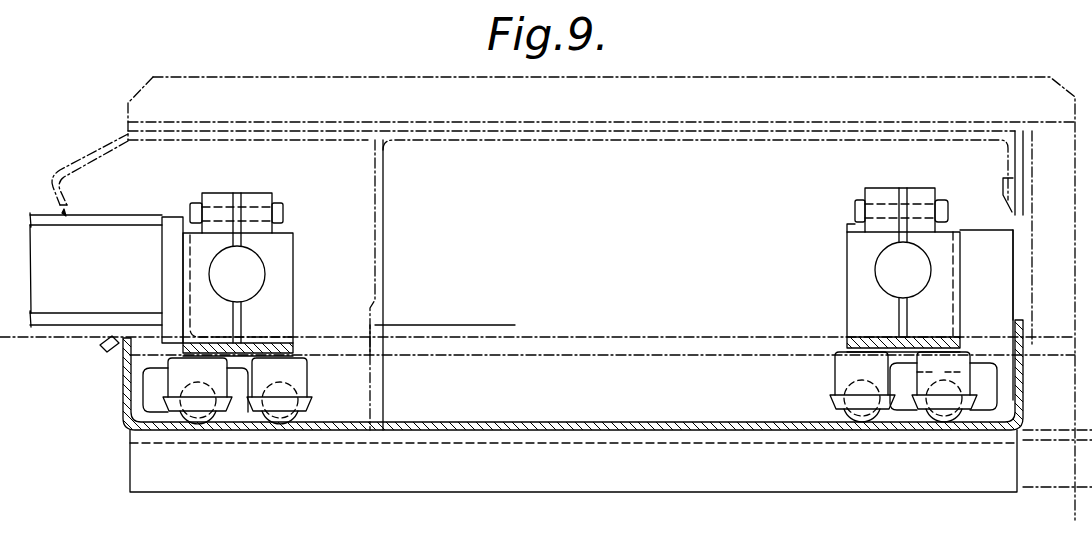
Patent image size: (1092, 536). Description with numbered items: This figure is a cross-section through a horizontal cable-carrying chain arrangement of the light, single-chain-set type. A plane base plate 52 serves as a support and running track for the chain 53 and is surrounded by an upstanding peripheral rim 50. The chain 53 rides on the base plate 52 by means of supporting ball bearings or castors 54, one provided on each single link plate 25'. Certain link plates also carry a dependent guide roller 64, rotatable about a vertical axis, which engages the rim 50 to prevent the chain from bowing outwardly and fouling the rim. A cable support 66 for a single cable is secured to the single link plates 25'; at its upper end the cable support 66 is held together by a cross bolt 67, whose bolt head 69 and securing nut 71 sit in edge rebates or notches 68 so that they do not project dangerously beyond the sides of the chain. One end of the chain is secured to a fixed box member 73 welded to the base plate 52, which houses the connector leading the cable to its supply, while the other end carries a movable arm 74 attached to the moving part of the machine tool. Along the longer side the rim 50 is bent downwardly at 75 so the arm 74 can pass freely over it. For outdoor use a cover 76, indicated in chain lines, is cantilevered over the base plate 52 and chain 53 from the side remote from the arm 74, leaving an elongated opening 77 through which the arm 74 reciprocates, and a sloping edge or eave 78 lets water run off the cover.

The single link plate 25' is at (905, 252).
The peripheral rim 50 is at (128, 383).
The base plate 52 is at (436, 418).
The chain 53 is at (541, 330).
The castor 54 is at (962, 375).
The guide roller 64 is at (148, 388).
The cable support 66 is at (851, 249).
The cross bolt 67 is at (878, 210).
The edge rebate 68 is at (851, 224).
The bolt head 69 is at (862, 200).
The securing nut 71 is at (938, 200).
The box member 73 is at (970, 230).
The movable arm 74 is at (67, 298).
The downwardly bent rim portion 75 is at (98, 347).
The cover 76 is at (383, 213).
The elongated opening 77 is at (120, 312).
The sloping edge 78 is at (93, 152).